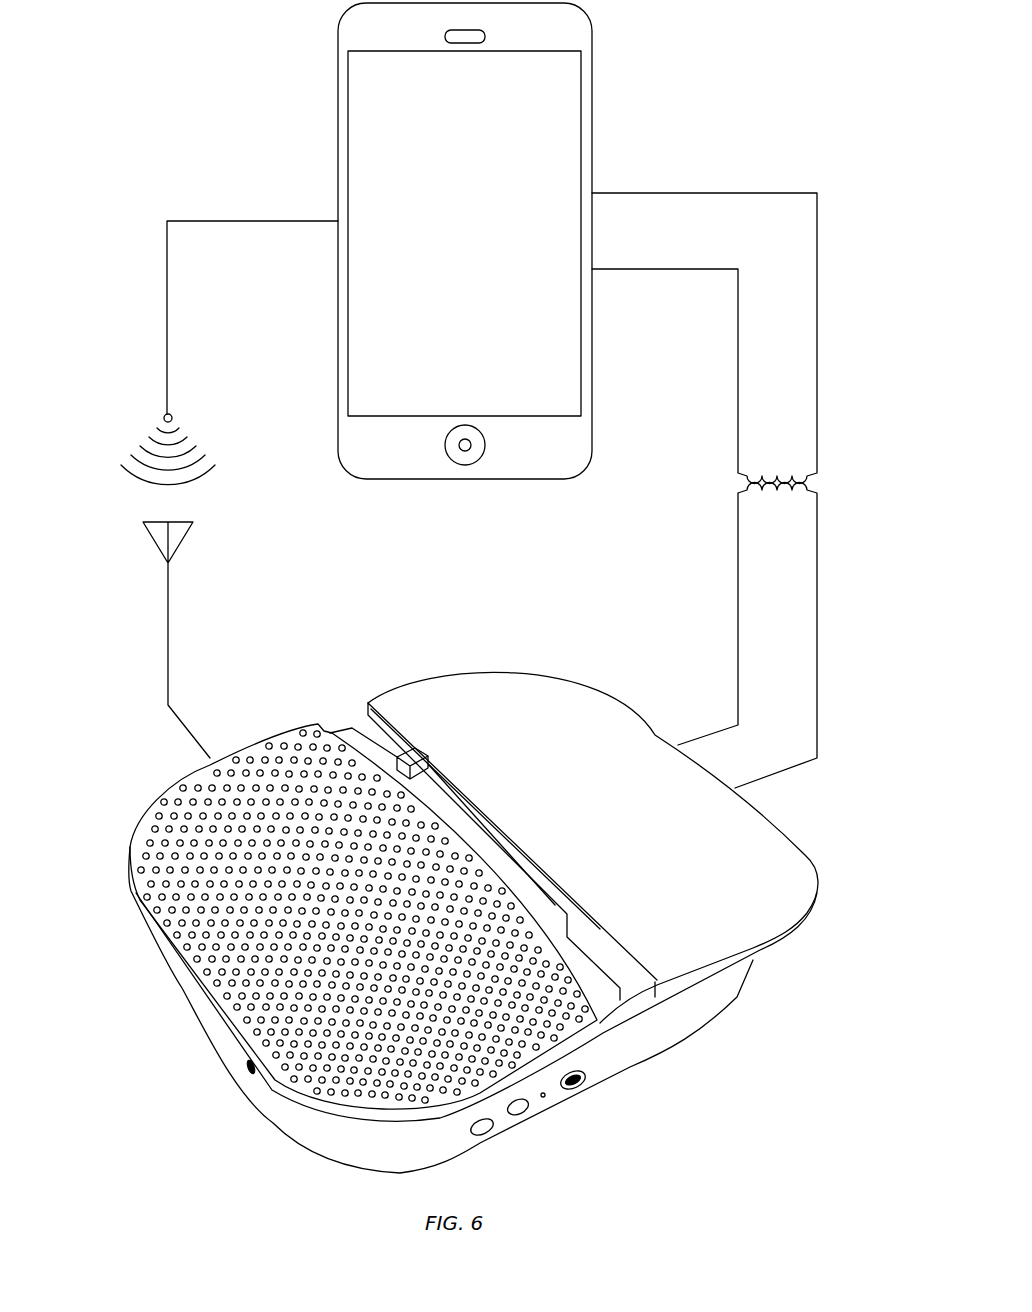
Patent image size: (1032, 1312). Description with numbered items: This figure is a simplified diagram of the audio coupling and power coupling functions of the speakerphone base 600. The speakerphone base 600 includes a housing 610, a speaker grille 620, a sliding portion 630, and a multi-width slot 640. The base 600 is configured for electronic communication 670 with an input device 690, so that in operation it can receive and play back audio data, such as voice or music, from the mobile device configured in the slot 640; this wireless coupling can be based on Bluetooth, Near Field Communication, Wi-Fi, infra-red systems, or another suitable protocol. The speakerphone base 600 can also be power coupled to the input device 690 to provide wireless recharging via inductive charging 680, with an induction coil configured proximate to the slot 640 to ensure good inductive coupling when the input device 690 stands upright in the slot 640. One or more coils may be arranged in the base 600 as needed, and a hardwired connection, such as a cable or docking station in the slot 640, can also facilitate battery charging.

The speakerphone base 600 is at (148, 1056).
The housing 610 is at (733, 993).
The speaker grille 620 is at (140, 842).
The sliding portion 630 is at (800, 877).
The multi-width slot 640 is at (660, 1005).
The audio coupling / electronic communication 670 is at (123, 503).
The inductive charging 680 is at (832, 485).
The input device 690 is at (598, 110).